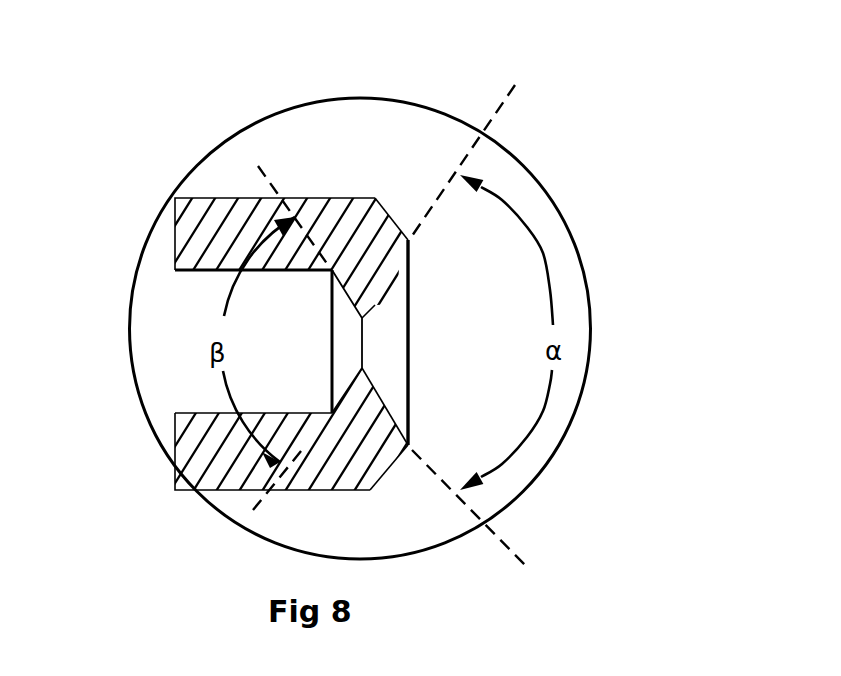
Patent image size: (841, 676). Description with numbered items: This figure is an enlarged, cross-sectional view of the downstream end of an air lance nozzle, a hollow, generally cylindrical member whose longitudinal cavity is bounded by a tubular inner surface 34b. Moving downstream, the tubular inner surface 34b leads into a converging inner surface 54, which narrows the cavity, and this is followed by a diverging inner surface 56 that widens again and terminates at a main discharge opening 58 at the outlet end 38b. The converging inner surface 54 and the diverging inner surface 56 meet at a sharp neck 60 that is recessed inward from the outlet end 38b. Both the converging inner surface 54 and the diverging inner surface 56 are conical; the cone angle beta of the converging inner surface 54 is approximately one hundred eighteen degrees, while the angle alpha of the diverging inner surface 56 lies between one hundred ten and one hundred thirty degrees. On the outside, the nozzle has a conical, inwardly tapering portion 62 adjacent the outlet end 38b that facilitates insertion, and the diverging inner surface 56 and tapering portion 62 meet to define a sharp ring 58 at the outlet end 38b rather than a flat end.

The tubular inner surface 34b is at (214, 273).
The outlet end 38b is at (408, 304).
The converging inner surface 54 is at (346, 384).
The diverging inner surface 56 is at (375, 303).
The main discharge opening / sharp ring 58 is at (408, 242).
The sharp neck 60 is at (363, 317).
The inwardly tapering portion 62 is at (385, 470).